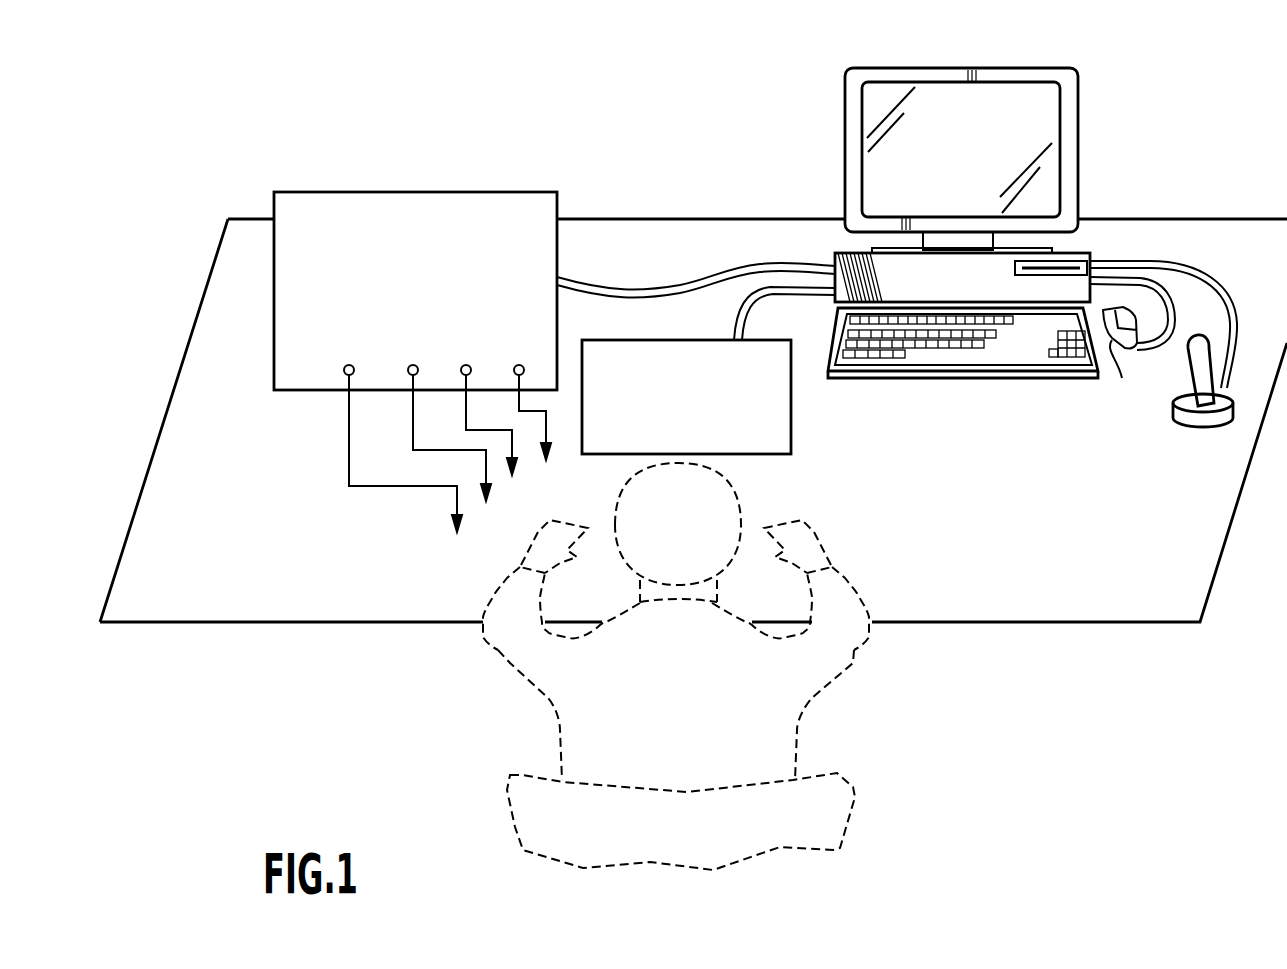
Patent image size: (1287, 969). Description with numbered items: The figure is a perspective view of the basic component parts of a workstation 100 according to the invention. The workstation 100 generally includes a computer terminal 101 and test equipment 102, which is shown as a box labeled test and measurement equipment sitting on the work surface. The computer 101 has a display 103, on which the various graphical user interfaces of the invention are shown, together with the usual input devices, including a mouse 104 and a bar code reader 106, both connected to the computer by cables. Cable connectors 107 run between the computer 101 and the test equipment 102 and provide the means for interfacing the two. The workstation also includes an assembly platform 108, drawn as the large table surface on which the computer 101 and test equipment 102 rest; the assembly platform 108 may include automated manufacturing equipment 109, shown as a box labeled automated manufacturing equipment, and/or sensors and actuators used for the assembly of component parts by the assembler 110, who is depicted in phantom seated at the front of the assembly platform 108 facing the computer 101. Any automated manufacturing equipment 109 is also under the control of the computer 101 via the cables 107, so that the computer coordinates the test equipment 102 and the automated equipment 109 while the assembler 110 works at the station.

The workstation 100 is at (665, 127).
The computer terminal 101 is at (1106, 118).
The test equipment 102 is at (432, 208).
The display 103 is at (973, 160).
The mouse 104 is at (1132, 346).
The bar code reader 106 is at (1185, 428).
The cable connectors 107 is at (593, 283).
The assembly platform 108 is at (949, 485).
The automated manufacturing equipment 109 is at (791, 420).
The assembler 110 is at (772, 730).